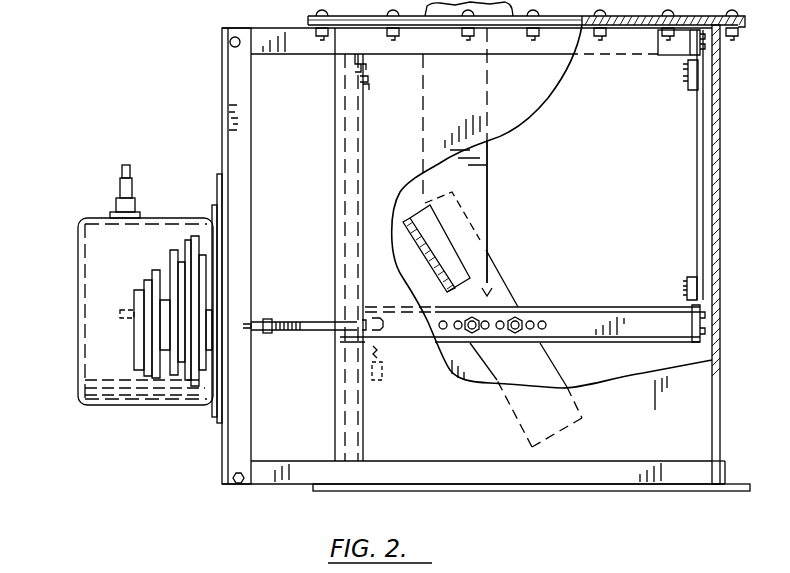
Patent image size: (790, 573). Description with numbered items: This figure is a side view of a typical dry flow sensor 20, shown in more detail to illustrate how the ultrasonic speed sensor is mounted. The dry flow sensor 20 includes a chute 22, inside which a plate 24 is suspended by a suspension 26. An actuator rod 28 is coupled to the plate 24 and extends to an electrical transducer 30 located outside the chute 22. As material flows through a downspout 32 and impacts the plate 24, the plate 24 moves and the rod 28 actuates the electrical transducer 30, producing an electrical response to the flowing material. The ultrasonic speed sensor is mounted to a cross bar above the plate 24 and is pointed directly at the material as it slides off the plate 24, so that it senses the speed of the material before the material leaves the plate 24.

The dry flow sensor 20 is at (202, 449).
The chute 22 is at (721, 95).
The plate 24 is at (540, 366).
The suspension 26 is at (697, 186).
The actuator rod 28 is at (304, 332).
The electrical transducer 30 is at (112, 324).
The downspout 32 is at (487, 166).